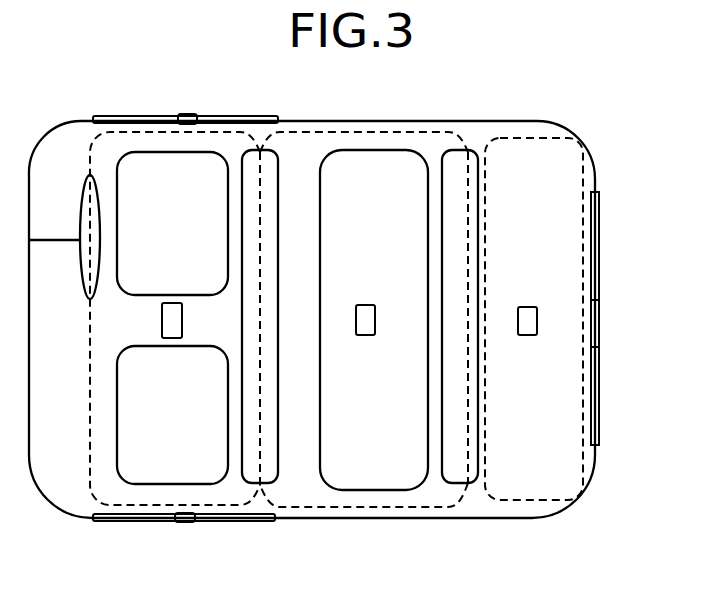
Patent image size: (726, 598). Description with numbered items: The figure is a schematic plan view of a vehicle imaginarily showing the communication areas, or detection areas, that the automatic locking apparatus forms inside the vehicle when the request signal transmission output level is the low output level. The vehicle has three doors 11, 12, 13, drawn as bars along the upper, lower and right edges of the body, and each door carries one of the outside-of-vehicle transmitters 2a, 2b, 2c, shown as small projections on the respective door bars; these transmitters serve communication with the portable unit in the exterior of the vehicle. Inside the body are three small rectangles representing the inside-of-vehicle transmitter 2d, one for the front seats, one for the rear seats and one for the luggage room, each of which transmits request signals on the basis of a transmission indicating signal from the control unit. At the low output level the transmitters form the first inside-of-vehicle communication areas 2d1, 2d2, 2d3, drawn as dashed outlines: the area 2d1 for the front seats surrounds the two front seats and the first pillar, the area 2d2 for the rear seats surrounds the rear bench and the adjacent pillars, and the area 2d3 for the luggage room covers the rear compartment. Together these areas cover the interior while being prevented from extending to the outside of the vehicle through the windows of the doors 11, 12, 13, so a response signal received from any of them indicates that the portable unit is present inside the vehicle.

The outside-of-vehicle transmitter 2a is at (188, 113).
The door 11 is at (250, 114).
The door 12 is at (104, 523).
The door 13 is at (599, 212).
The outside-of-vehicle transmitter 2b is at (185, 523).
The outside-of-vehicle transmitter 2c is at (599, 322).
The inside-of-vehicle transmitter 2d is at (172, 335).
The first inside-of-vehicle communication area for front seats 2d1 is at (125, 523).
The first inside-of-vehicle communication area for rear seats 2d2 is at (322, 520).
The first inside-of-vehicle communication area for luggage room 2d3 is at (522, 505).